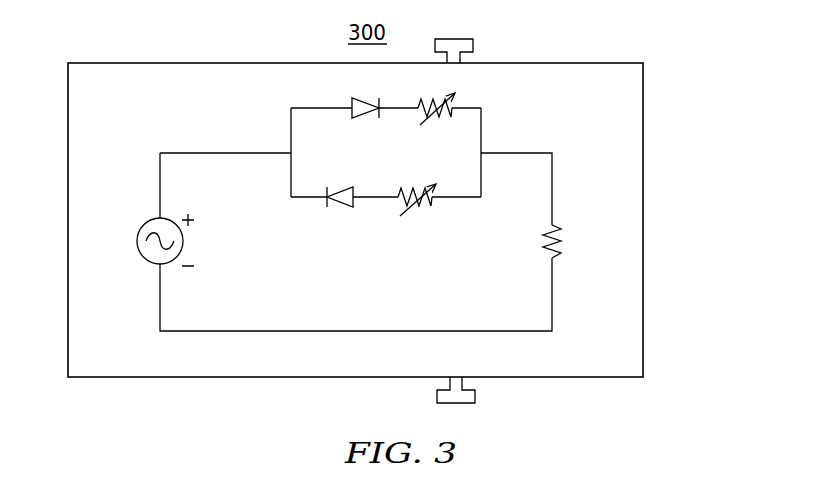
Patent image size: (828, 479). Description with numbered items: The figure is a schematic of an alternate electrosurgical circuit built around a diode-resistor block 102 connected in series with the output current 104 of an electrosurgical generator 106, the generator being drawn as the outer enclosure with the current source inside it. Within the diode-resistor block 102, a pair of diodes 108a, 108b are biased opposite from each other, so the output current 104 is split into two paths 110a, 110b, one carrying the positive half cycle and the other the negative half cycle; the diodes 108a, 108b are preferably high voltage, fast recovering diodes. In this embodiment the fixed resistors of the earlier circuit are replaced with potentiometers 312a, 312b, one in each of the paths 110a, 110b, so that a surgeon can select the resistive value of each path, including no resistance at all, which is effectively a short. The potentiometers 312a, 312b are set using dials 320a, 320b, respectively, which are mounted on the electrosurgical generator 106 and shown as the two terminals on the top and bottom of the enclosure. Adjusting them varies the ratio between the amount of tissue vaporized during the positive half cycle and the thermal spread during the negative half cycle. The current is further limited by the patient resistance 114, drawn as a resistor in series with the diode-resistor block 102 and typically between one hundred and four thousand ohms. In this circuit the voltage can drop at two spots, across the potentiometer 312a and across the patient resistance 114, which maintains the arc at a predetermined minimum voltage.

The diode-resistor block 102 is at (500, 122).
The output current 104 is at (183, 245).
The electrosurgical generator 106 is at (643, 204).
The diode 108a is at (360, 119).
The diode 108b is at (340, 207).
The path 110a is at (479, 108).
The path 110b is at (460, 198).
The patient resistance 114 is at (558, 236).
The potentiometer 312a is at (447, 112).
The potentiometer 312b is at (413, 213).
The dial 320a is at (475, 45).
The dial 320b is at (475, 395).